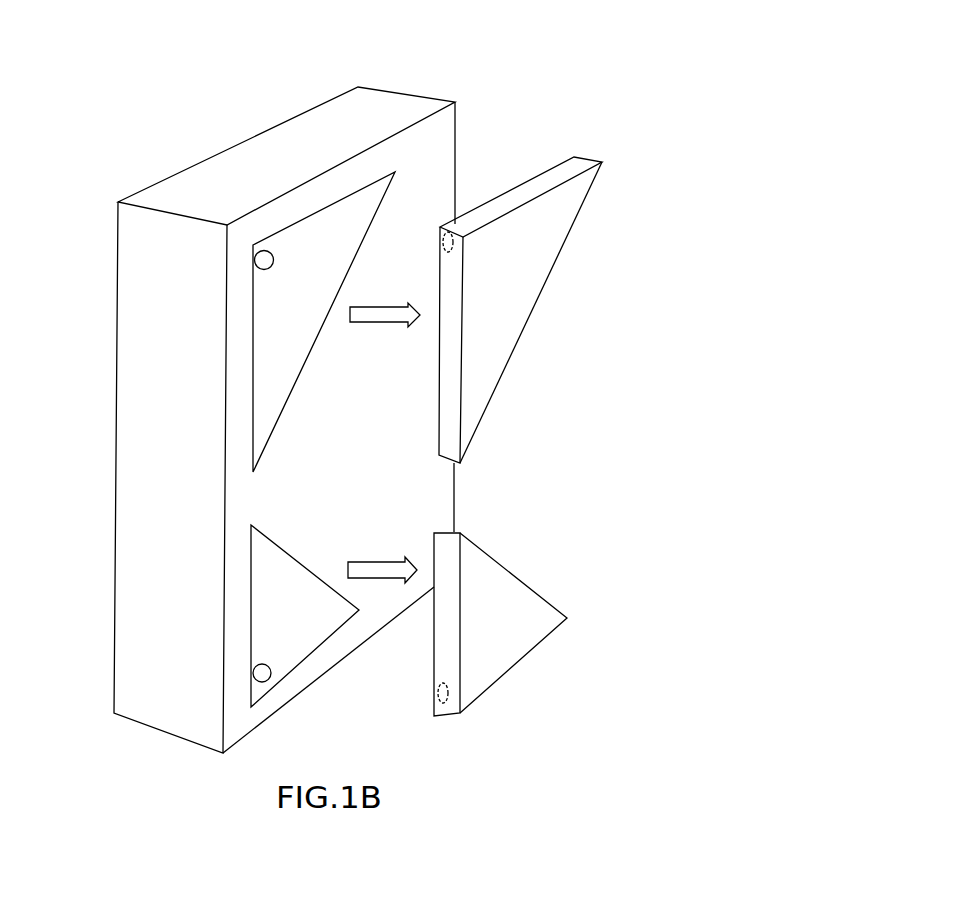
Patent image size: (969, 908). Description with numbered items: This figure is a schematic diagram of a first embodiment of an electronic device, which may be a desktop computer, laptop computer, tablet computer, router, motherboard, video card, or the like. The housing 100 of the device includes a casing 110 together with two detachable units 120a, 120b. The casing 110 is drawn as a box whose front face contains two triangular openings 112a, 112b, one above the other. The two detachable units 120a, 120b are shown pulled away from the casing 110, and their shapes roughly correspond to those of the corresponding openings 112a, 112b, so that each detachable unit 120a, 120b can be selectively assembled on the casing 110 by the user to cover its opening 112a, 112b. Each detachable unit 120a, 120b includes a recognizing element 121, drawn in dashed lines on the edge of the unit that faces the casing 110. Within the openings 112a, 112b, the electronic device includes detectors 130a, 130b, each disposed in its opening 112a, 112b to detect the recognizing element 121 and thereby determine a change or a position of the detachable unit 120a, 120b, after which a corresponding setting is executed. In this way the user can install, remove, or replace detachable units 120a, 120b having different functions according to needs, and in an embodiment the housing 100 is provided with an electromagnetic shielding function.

The housing 100 is at (236, 107).
The casing 110 is at (405, 103).
The opening 112a is at (273, 587).
The opening 112b is at (273, 350).
The detachable unit 120a is at (510, 648).
The detachable unit 120b is at (520, 302).
The recognizing element 121 is at (449, 231).
The detector 130a is at (253, 671).
The detector 130b is at (255, 259).